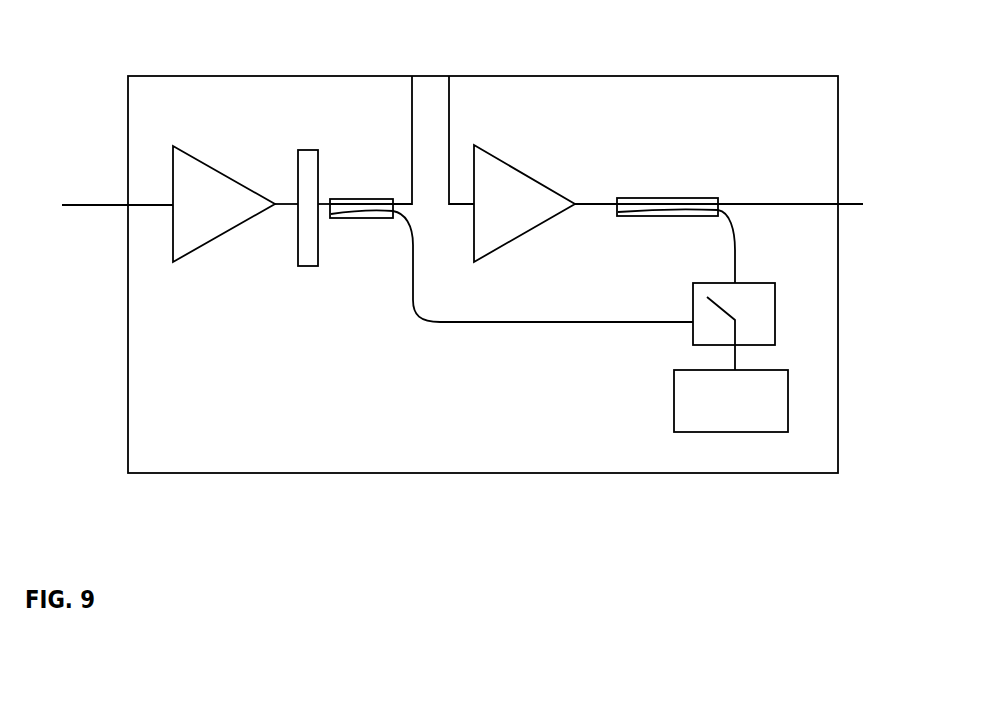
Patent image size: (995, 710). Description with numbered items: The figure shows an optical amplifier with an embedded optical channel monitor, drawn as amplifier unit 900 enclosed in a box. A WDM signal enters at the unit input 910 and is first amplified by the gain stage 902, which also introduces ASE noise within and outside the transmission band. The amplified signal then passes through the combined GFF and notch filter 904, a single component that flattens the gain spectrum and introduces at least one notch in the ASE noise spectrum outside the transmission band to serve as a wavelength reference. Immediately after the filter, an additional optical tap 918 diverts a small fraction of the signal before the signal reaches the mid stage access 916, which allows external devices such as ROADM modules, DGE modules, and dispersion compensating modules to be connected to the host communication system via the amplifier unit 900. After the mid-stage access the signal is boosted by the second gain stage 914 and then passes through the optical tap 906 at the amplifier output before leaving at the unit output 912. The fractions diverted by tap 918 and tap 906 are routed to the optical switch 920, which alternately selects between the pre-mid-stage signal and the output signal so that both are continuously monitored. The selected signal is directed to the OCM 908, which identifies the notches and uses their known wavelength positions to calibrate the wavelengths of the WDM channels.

The amplifier unit 900 is at (838, 265).
The gain stage 902 is at (217, 167).
The combined GFF and notch filter 904 is at (307, 148).
The optical tap 906 is at (662, 197).
The OCM 908 is at (674, 390).
The unit input 910 is at (120, 214).
The unit output 912 is at (850, 188).
The second gain stage 914 is at (523, 172).
The mid stage access 916 is at (462, 70).
The optical tap 918 is at (337, 198).
The optical switch 920 is at (775, 303).